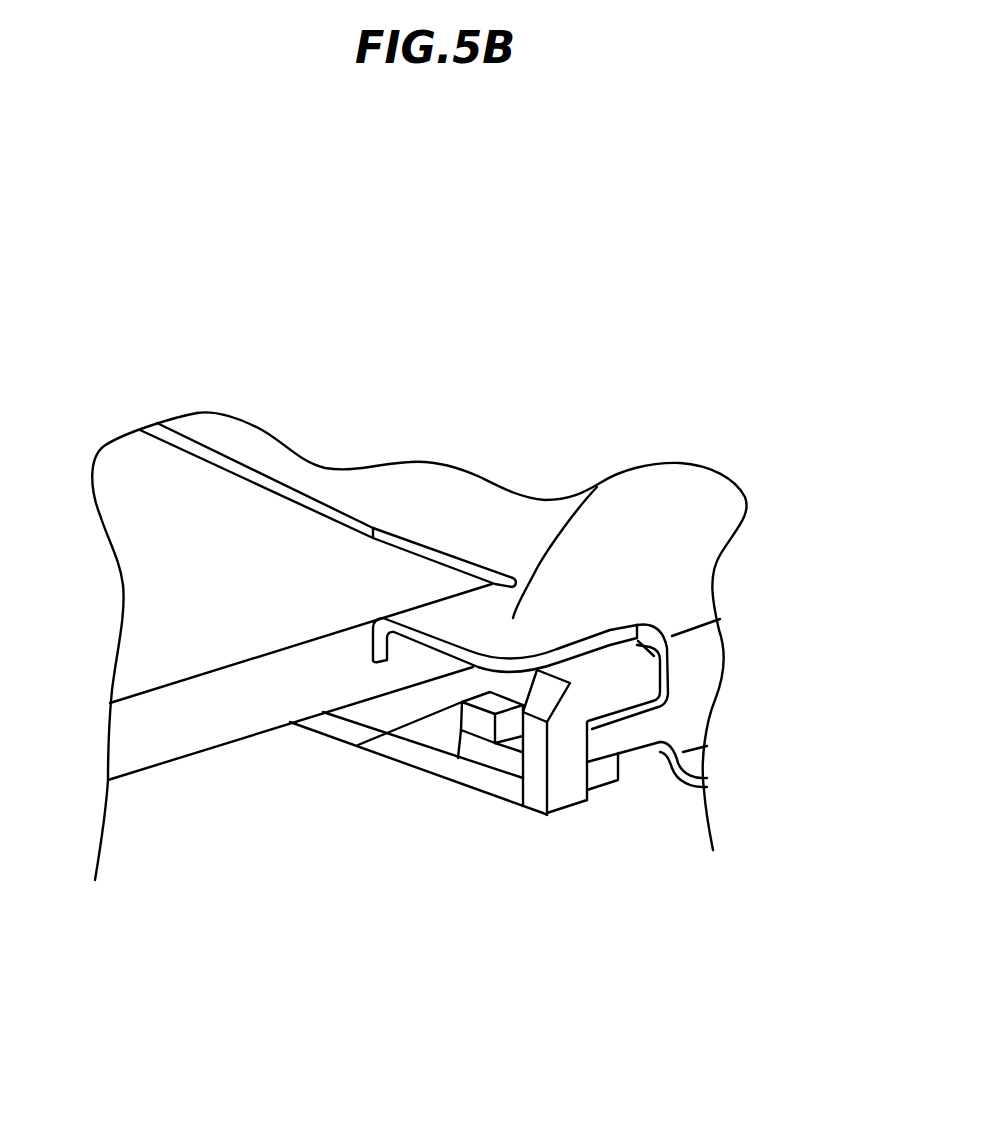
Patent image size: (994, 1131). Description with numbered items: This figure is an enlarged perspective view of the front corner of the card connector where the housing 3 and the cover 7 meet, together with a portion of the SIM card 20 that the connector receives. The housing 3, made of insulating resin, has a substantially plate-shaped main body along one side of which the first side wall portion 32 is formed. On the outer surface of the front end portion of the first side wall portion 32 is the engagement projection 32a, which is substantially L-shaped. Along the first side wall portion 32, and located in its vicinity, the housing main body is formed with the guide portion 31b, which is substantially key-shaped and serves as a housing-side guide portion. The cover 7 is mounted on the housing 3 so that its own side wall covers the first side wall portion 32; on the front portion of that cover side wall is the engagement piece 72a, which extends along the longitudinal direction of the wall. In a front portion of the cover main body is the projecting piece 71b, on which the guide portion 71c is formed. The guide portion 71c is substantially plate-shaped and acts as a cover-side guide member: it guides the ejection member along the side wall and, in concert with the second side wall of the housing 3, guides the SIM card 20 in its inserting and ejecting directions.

The SIM card 20 is at (148, 591).
The cover 7 is at (414, 494).
The projecting piece 71b is at (597, 487).
The housing 3 is at (298, 734).
The guide portion 71c is at (396, 651).
The guide portion 31b is at (474, 690).
The engagement projection 32a is at (560, 755).
The first side wall portion 32 is at (640, 686).
The engagement piece 72a is at (622, 743).